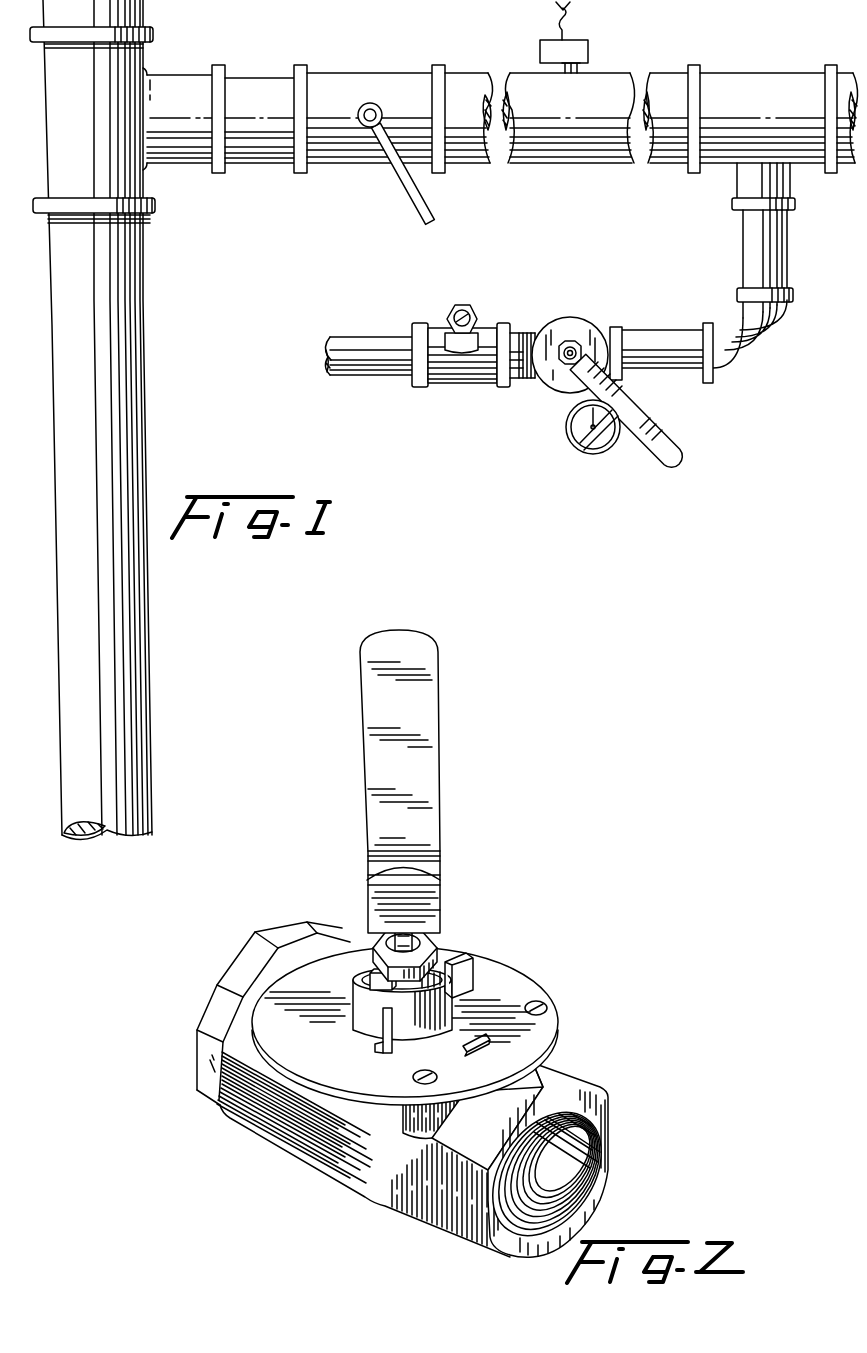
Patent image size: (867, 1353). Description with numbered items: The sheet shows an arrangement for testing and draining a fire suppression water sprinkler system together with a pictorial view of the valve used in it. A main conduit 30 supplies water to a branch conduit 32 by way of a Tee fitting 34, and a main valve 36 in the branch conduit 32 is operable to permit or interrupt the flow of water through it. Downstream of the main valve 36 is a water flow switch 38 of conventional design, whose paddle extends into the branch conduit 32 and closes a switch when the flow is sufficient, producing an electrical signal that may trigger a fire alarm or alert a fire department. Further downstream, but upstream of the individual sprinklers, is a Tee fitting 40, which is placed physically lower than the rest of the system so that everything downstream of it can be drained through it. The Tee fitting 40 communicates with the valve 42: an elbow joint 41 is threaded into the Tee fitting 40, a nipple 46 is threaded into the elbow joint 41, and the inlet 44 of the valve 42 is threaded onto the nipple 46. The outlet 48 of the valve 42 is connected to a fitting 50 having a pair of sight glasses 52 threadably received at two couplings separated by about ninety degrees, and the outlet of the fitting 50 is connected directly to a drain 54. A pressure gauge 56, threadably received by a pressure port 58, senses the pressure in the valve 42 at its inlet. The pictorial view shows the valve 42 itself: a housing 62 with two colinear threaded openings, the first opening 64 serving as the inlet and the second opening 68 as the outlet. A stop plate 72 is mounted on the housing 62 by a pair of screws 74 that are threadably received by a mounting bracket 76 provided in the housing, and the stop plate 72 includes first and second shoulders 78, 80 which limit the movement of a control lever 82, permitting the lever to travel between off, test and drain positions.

In FIG. 1, the main conduit 30 is at (150, 733).
In FIG. 1, the branch conduit 32 is at (263, 78).
In FIG. 1, the Tee fitting 34 is at (177, 82).
In FIG. 1, the main valve 36 is at (368, 78).
In FIG. 1, the water flow switch 38 is at (588, 52).
In FIG. 1, the Tee fitting 40 is at (773, 73).
In FIG. 1, the elbow joint 41 is at (777, 352).
In FIG. 1, the valve 42 is at (540, 380).
In FIG. 1, the inlet 44 is at (612, 327).
In FIG. 1, the nipple 46 is at (665, 330).
In FIG. 1, the outlet 48 is at (533, 327).
In FIG. 1, the fitting 50 is at (462, 385).
In FIG. 1, the sight glass 52 is at (465, 305).
In FIG. 1, the drain 54 is at (367, 375).
In FIG. 1, the pressure gauge 56 is at (585, 453).
In FIG. 1, the pressure port 58 is at (637, 395).
In FIG. 2, the housing 62 is at (423, 1089).
In FIG. 2, the first threaded opening 64 is at (242, 953).
In FIG. 2, the second threaded opening 68 is at (600, 1172).
In FIG. 2, the stop plate 72 is at (512, 968).
In FIG. 2, the screw 74 is at (550, 1010).
In FIG. 2, the mounting bracket 76 is at (432, 1138).
In FIG. 2, the first shoulder 78 is at (388, 1050).
In FIG. 2, the second shoulder 80 is at (440, 912).
In FIG. 2, the control lever 82 is at (440, 735).